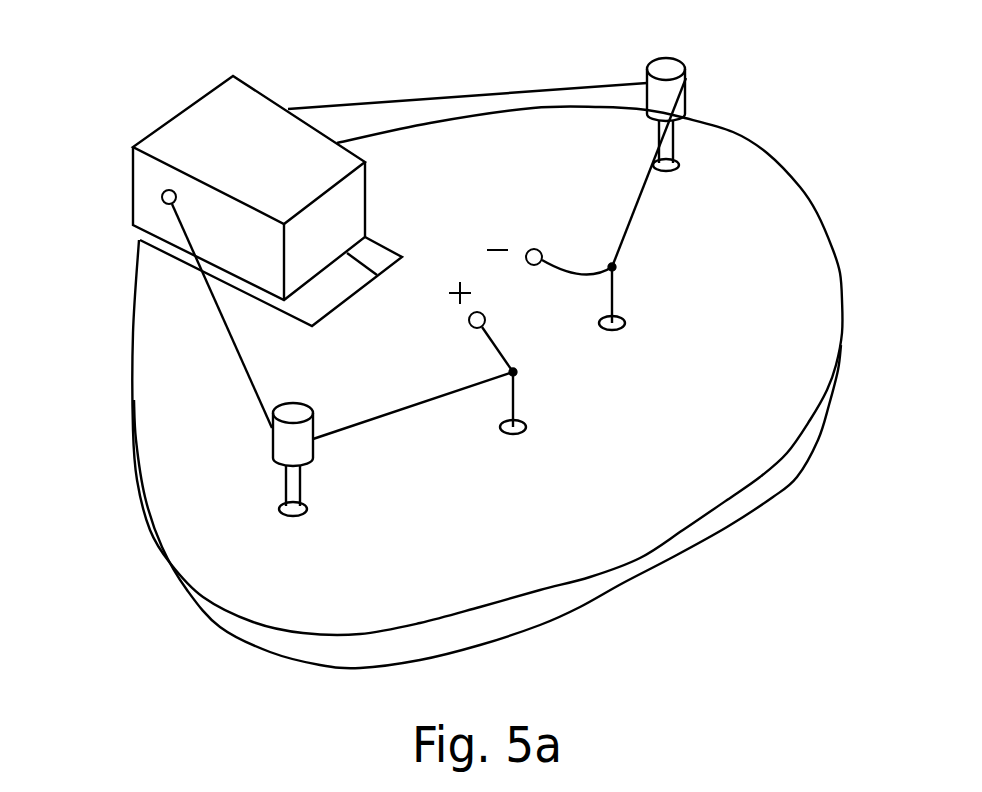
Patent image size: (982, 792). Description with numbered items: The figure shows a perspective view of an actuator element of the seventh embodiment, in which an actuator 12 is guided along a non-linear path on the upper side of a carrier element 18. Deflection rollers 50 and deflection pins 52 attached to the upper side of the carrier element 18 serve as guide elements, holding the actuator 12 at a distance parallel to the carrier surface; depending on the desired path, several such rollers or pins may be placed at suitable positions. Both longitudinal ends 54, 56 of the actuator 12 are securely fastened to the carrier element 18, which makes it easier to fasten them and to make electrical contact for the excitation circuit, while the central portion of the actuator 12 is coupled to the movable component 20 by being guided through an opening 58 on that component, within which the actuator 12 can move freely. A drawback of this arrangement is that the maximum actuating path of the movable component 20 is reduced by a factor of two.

The actuator 12 is at (370, 103).
The carrier element 18 is at (565, 616).
The movable component 20 is at (205, 117).
The deflection roller 50 is at (290, 435).
The deflection pin 52 is at (527, 405).
The longitudinal end 54 is at (468, 318).
The longitudinal end 56 is at (531, 248).
The opening 58 is at (164, 191).